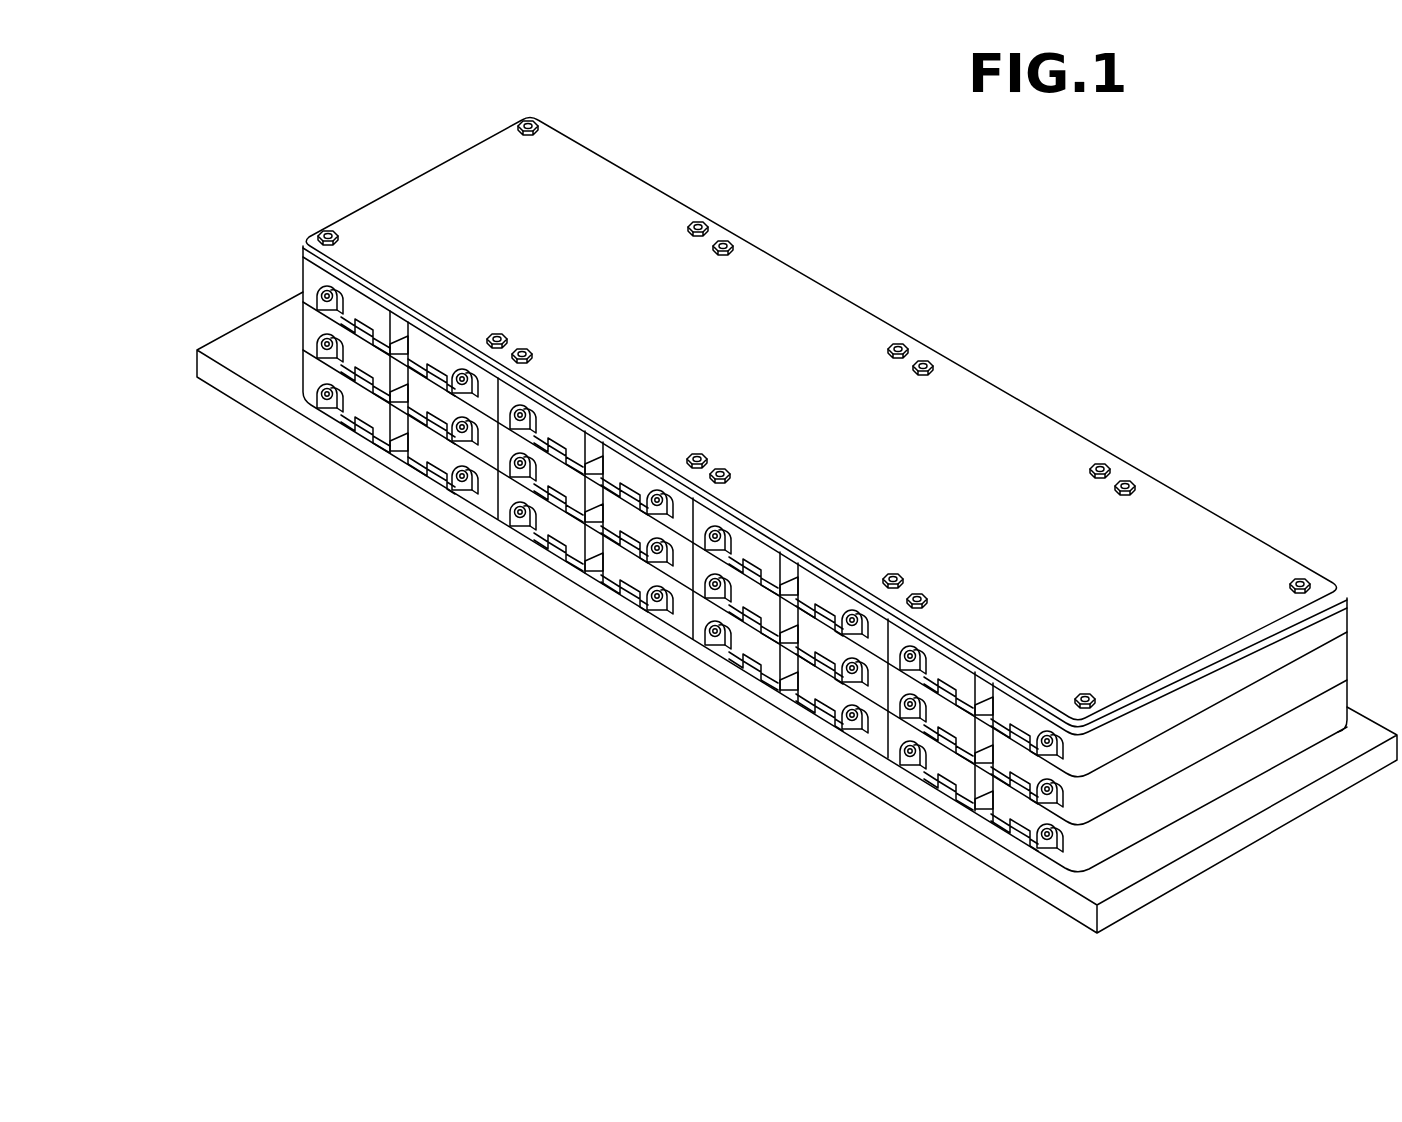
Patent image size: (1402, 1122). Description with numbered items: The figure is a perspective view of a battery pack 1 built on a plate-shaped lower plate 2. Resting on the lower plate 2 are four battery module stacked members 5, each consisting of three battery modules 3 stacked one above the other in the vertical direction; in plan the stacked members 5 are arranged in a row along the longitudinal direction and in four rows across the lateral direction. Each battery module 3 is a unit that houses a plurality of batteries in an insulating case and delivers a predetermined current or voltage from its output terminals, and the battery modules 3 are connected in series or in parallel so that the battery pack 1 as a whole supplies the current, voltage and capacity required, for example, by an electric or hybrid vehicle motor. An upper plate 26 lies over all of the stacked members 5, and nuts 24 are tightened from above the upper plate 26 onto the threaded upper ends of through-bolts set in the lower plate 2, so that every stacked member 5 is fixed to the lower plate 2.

The battery pack 1 is at (406, 78).
The lower plate 2 is at (262, 360).
The battery module 3 is at (311, 283).
The battery module stacked member 5 is at (493, 520).
The nut 24 is at (529, 117).
The upper plate 26 is at (817, 307).